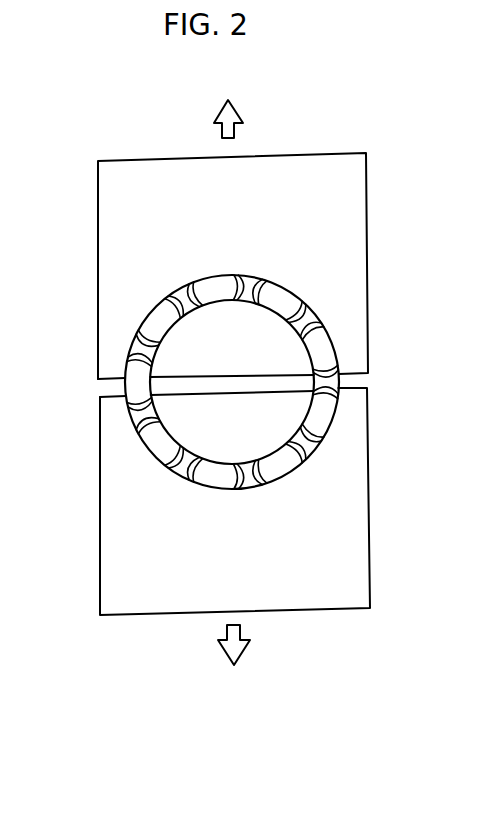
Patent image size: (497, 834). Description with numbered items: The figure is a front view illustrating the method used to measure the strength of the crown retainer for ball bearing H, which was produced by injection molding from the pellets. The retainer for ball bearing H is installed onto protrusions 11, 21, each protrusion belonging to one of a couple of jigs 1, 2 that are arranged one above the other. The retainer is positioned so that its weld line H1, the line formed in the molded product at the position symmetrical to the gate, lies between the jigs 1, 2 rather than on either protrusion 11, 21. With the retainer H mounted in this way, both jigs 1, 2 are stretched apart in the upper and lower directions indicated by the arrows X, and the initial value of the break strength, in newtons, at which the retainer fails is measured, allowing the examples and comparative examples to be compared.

The jig 1 is at (127, 233).
The jig 2 is at (120, 552).
The protrusion 11 is at (200, 335).
The protrusion 21 is at (208, 440).
The crown retainer for ball bearing H is at (252, 278).
The weld line H1 is at (137, 388).
The arrows X is at (238, 108).